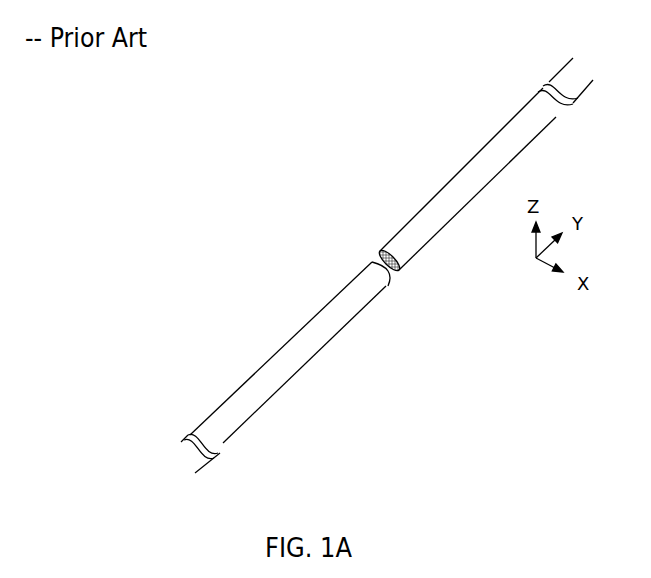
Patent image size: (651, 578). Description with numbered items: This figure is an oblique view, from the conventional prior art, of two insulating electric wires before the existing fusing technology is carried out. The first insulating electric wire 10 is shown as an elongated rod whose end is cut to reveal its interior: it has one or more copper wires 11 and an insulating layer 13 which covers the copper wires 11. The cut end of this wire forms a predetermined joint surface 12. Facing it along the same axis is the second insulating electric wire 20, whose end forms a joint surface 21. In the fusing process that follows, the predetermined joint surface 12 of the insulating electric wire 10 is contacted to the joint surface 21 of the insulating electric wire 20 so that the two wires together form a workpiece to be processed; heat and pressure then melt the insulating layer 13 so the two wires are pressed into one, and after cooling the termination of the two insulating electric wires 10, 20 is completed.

The insulating electric wire 10 is at (455, 176).
The copper wires 11 is at (359, 257).
The predetermined joint surface 12 is at (371, 272).
The insulating layer 13 is at (409, 281).
The insulating electric wire 20 is at (294, 367).
The joint surface 21 is at (389, 288).